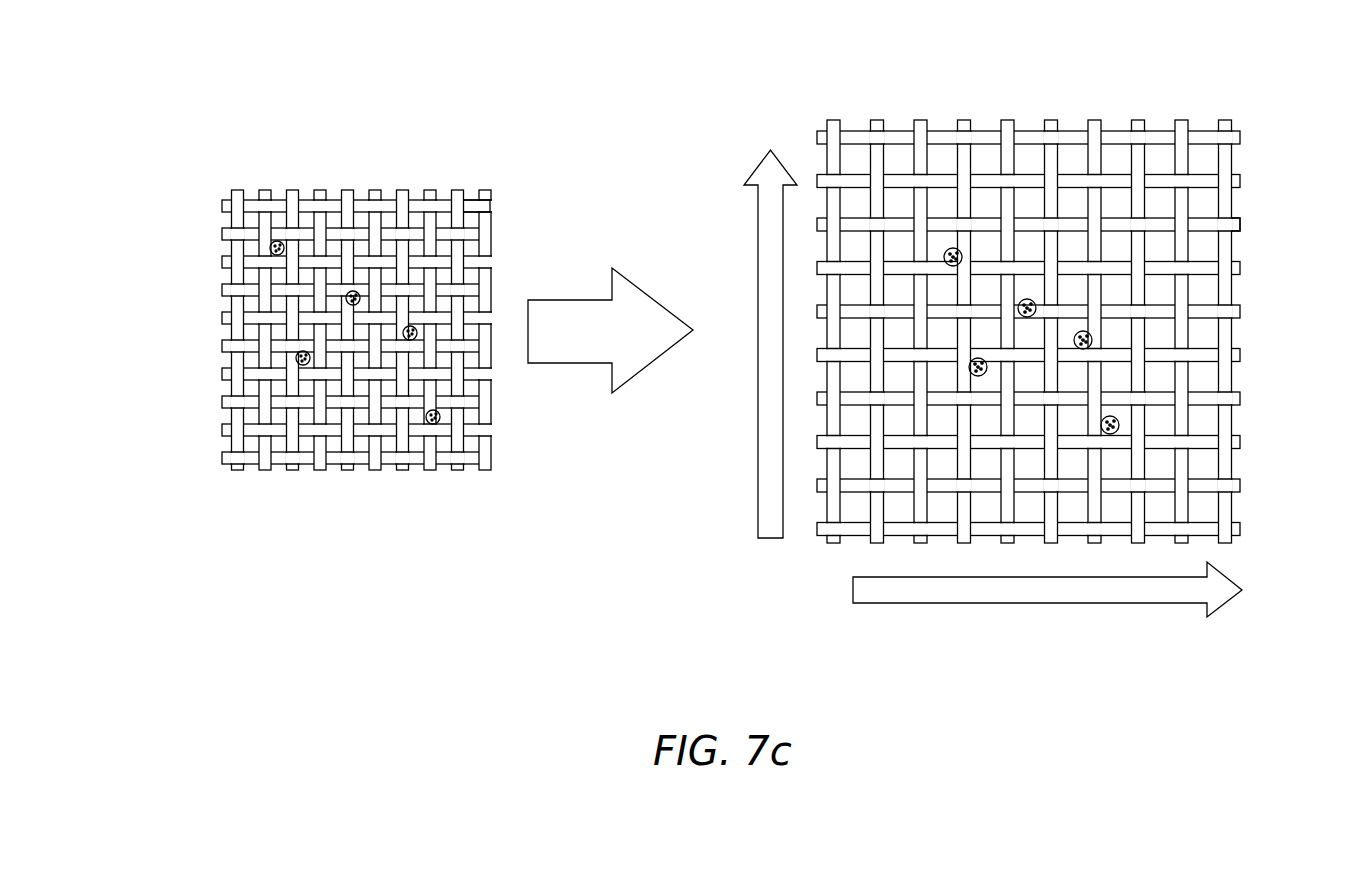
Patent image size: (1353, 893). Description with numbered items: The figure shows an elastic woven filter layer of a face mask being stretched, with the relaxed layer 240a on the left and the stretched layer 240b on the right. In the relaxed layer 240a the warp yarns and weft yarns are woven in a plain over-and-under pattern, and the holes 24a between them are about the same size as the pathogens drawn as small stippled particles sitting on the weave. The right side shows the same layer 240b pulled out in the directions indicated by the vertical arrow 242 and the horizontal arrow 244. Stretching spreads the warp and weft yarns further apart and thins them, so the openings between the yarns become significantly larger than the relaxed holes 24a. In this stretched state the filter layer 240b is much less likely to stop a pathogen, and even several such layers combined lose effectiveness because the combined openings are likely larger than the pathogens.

The holes 24a is at (302, 208).
The filter layer in relaxed state 240a is at (237, 190).
The filter layer in stretched state 240b is at (877, 122).
The arrow 242 is at (767, 240).
The arrow 244 is at (1078, 590).